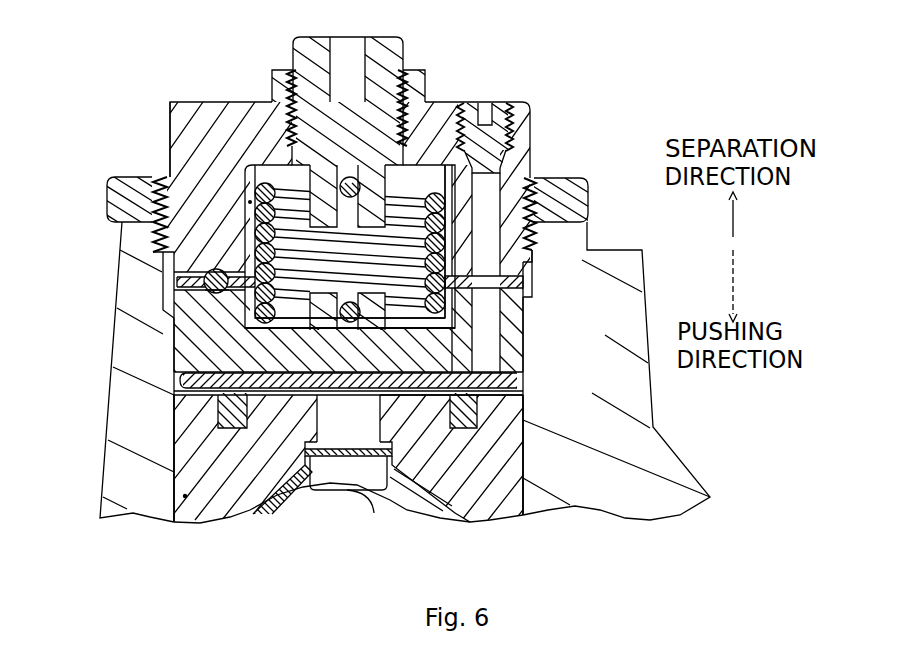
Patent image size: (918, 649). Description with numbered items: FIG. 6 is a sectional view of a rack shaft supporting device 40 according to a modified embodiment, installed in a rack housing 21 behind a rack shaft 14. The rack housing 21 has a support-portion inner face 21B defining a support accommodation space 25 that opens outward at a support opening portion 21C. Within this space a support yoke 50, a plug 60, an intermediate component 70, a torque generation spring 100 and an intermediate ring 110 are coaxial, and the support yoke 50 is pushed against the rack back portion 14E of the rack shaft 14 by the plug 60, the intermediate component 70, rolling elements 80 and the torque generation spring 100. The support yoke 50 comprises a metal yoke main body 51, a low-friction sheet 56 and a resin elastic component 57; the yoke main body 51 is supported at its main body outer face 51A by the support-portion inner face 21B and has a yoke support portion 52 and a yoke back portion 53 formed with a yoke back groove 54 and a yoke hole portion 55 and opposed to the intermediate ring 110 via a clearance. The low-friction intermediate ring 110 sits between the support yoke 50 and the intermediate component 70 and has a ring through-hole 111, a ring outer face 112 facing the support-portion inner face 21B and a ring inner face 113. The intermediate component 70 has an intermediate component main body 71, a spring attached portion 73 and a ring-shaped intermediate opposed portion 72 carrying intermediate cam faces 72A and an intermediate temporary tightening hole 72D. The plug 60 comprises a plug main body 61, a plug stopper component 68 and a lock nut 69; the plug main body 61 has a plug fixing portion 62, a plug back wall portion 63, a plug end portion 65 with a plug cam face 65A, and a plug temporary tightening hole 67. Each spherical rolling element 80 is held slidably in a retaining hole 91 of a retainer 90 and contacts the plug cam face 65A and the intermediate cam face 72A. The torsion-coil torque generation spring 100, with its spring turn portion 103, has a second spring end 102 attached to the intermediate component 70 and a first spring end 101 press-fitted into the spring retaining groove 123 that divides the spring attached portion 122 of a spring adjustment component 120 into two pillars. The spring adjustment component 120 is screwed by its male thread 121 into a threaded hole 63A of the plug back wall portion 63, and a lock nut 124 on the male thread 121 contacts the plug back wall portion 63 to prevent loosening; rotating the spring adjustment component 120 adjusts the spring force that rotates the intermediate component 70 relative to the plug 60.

The rack shaft 14 is at (345, 524).
The rack back portion 14E is at (372, 512).
The rack housing 21 is at (100, 499).
The support-portion inner face 21B is at (174, 429).
The support opening portion 21C is at (124, 236).
The support accommodation space 25 is at (185, 498).
The rack shaft supporting device 40 is at (615, 56).
The support yoke 50 is at (535, 469).
The yoke main body 51 is at (172, 481).
The main body outer face 51A is at (528, 508).
The yoke support portion 52 is at (505, 519).
The yoke back portion 53 is at (516, 402).
The yoke back groove 54 is at (467, 428).
The yoke hole portion 55 is at (396, 459).
The low-friction sheet 56 is at (261, 508).
The resin elastic component 57 is at (229, 427).
The plug 60 is at (157, 85).
The plug main body 61 is at (170, 108).
The plug fixing portion 62 is at (532, 180).
The plug back wall portion 63 is at (268, 102).
The threaded hole 63A is at (298, 114).
The plug end portion 65 is at (534, 252).
The plug cam face 65A is at (222, 266).
The plug temporary tightening hole 67 is at (495, 200).
The plug stopper component 68 is at (498, 102).
The lock nut 69 is at (590, 200).
The intermediate component 70 is at (535, 354).
The intermediate component main body 71 is at (277, 327).
The intermediate opposed portion 72 is at (527, 332).
The intermediate cam face 72A is at (246, 334).
The intermediate temporary tightening hole 72D is at (530, 300).
The spring attached portion 73 is at (296, 340).
The rolling element 80 is at (202, 272).
The retainer 90 is at (532, 280).
The retaining hole 91 is at (213, 295).
The torque generation spring 100 is at (259, 169).
The first spring end 101 is at (347, 175).
The second spring end 102 is at (355, 332).
The spring turn portion 103 is at (436, 197).
The intermediate ring 110 is at (528, 380).
The ring through-hole 111 is at (391, 441).
The ring outer face 112 is at (178, 381).
The ring inner face 113 is at (272, 390).
The spring adjustment component 120 is at (374, 37).
The male thread 121 is at (405, 128).
The spring attached portion 122 is at (310, 210).
The spring retaining groove 123 is at (350, 226).
The lock nut 124 is at (417, 68).